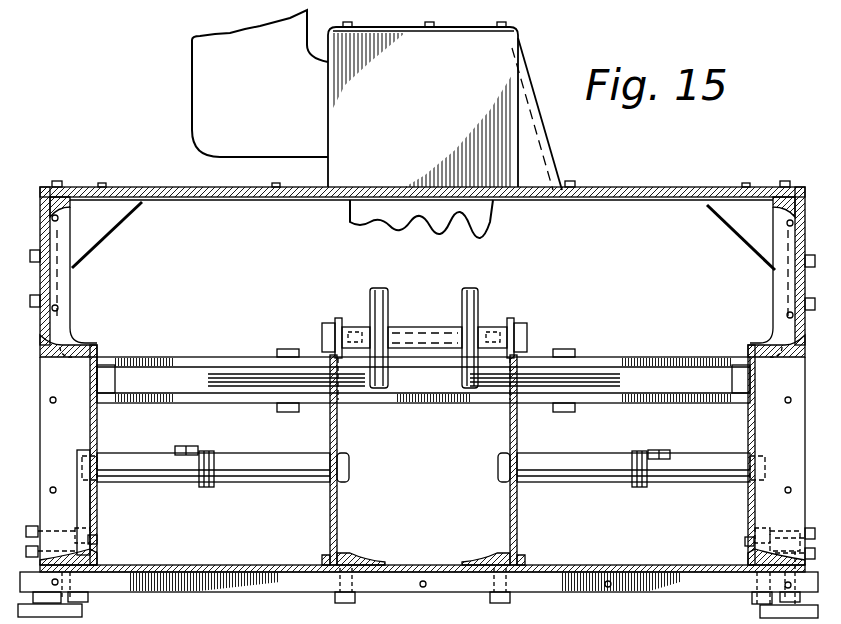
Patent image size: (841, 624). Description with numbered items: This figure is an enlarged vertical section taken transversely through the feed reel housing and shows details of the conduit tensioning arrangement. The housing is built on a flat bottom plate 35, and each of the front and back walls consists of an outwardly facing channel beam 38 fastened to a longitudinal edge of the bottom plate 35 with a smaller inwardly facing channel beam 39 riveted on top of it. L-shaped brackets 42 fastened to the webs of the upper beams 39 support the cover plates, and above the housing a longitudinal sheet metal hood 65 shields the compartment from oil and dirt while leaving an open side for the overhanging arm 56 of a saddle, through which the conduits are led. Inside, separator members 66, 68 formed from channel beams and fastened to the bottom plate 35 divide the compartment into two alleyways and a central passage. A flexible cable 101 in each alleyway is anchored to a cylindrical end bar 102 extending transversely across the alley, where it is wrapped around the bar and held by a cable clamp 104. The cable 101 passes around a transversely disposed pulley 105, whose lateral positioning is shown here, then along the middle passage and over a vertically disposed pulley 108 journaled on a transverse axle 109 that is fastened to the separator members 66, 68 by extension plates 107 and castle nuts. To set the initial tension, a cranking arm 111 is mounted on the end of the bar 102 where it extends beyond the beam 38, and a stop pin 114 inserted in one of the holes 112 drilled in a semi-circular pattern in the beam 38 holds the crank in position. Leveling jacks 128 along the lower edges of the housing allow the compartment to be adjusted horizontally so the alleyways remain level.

The bottom plate 35 is at (317, 585).
The channel beam 38 is at (97, 442).
The channel beam 39 is at (790, 287).
The L-shaped bracket 42 is at (692, 200).
The arm 56 is at (192, 69).
The hood 65 is at (458, 55).
The separator member 66 is at (510, 507).
The separator member 68 is at (338, 522).
The flexible cable 101 is at (210, 452).
The cylindrical end bar 102 is at (283, 465).
The cable clamp 104 is at (670, 450).
The pulley 105 is at (246, 376).
The extension plate 107 is at (509, 318).
The pulley 108 is at (462, 294).
The transverse axle 109 is at (417, 329).
The cranking arm 111 is at (82, 523).
The holes 112 is at (92, 530).
The stop pin 114 is at (98, 540).
The leveling jack 128 is at (805, 530).